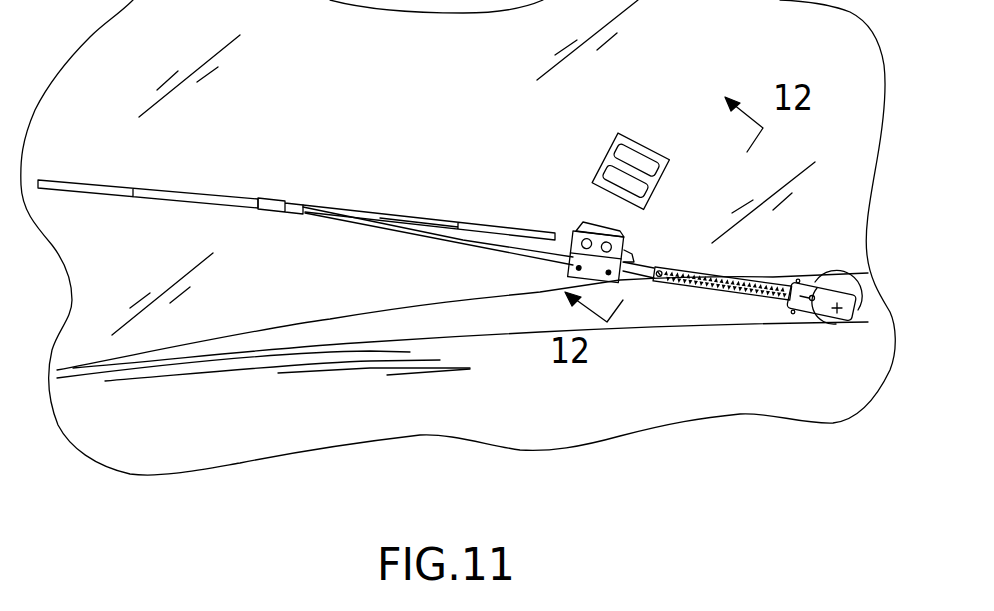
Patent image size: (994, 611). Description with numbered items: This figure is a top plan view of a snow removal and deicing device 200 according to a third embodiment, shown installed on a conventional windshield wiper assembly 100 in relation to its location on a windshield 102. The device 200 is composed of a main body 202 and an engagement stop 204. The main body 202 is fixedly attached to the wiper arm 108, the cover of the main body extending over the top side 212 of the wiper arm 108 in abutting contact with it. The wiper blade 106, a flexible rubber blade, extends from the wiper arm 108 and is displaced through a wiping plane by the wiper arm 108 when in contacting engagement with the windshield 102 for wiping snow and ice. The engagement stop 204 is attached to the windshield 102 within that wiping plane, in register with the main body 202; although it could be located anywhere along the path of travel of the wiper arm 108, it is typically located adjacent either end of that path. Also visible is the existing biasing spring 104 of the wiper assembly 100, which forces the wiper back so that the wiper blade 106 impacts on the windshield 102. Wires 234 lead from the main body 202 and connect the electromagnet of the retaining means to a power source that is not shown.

The wiper assembly 100 is at (273, 197).
The windshield 102 is at (302, 293).
The biasing spring 104 is at (737, 295).
The wiper blade 106 is at (77, 182).
The wiper arm 108 is at (637, 276).
The snow removal and deicing device 200 is at (538, 112).
The main body 202 is at (573, 247).
The engagement stop 204 is at (640, 133).
The top side 212 is at (459, 249).
The wires 234 is at (625, 252).